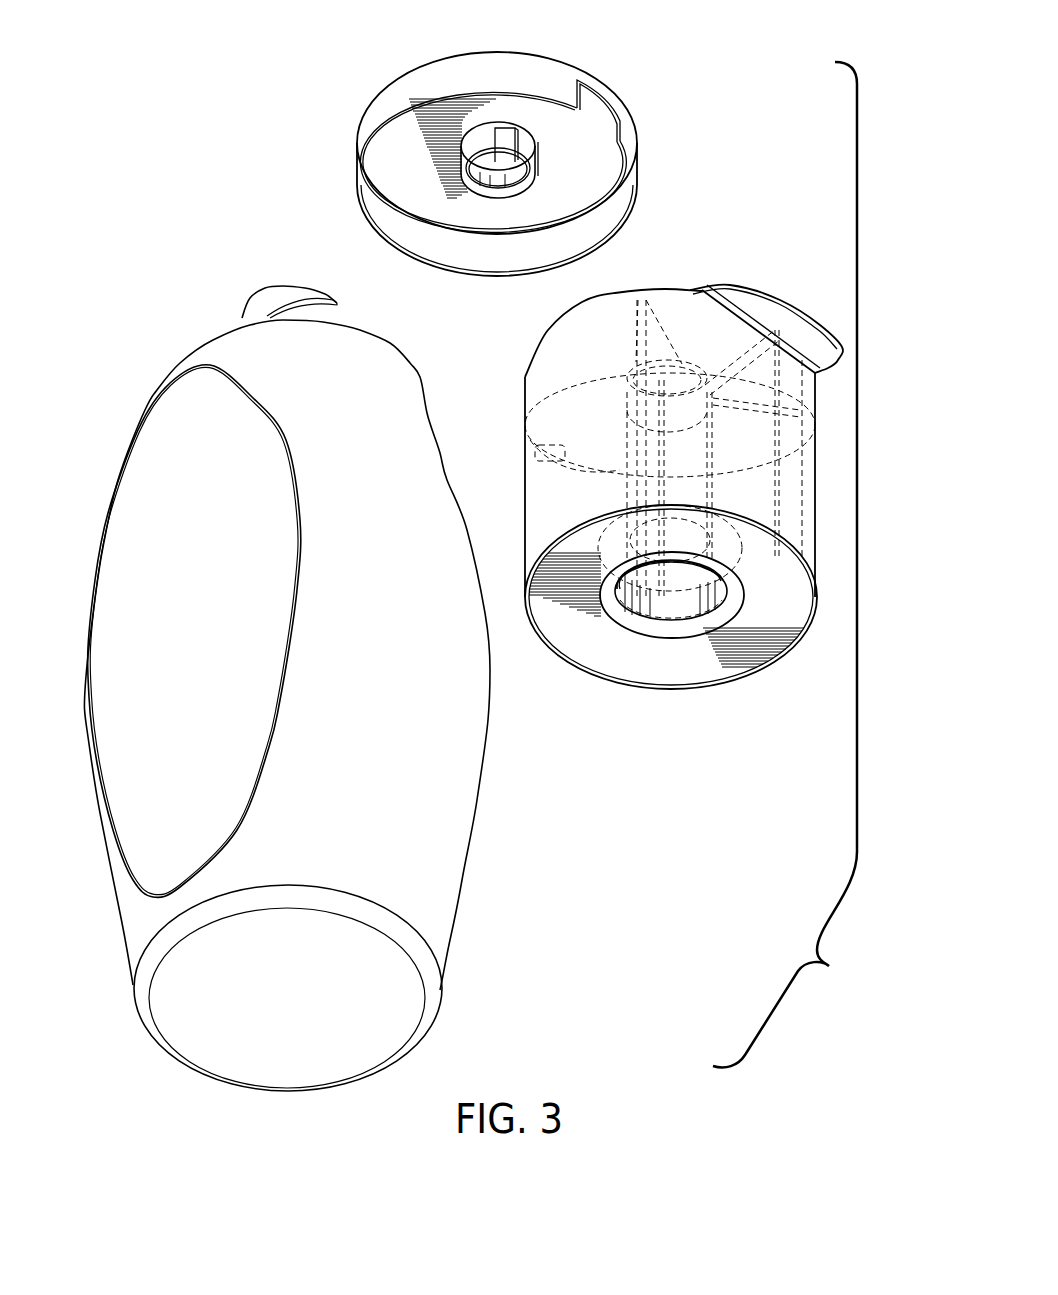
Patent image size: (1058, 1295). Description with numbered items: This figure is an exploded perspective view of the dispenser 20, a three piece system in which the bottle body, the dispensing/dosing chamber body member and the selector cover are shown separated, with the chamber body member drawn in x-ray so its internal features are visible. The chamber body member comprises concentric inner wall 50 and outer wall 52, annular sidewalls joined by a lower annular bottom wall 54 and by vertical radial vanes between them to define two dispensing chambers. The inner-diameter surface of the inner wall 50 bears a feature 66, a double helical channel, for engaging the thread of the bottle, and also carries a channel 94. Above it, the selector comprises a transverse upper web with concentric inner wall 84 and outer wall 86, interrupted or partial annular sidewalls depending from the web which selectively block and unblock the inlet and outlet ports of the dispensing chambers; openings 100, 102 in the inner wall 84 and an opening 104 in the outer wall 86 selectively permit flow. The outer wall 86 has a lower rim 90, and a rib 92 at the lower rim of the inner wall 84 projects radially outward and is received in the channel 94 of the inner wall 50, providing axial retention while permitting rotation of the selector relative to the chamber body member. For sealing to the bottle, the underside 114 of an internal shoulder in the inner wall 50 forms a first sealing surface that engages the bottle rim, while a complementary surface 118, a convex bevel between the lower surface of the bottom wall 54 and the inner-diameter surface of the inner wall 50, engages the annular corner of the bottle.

The dispenser 20 is at (785, 565).
The inner wall 50 is at (672, 607).
The outer wall 52 is at (546, 512).
The lower annular bottom wall 54 is at (723, 663).
The feature 66 is at (623, 593).
The inner wall 84 is at (455, 150).
The outer wall 86 is at (382, 99).
The lower rim 90 is at (637, 198).
The rib 92 is at (510, 190).
The channel 94 is at (678, 433).
The opening 100 is at (552, 160).
The opening 102 is at (508, 124).
The opening 104 is at (612, 99).
The underside of internal shoulder 114 is at (707, 542).
The complementary surface 118 is at (671, 634).